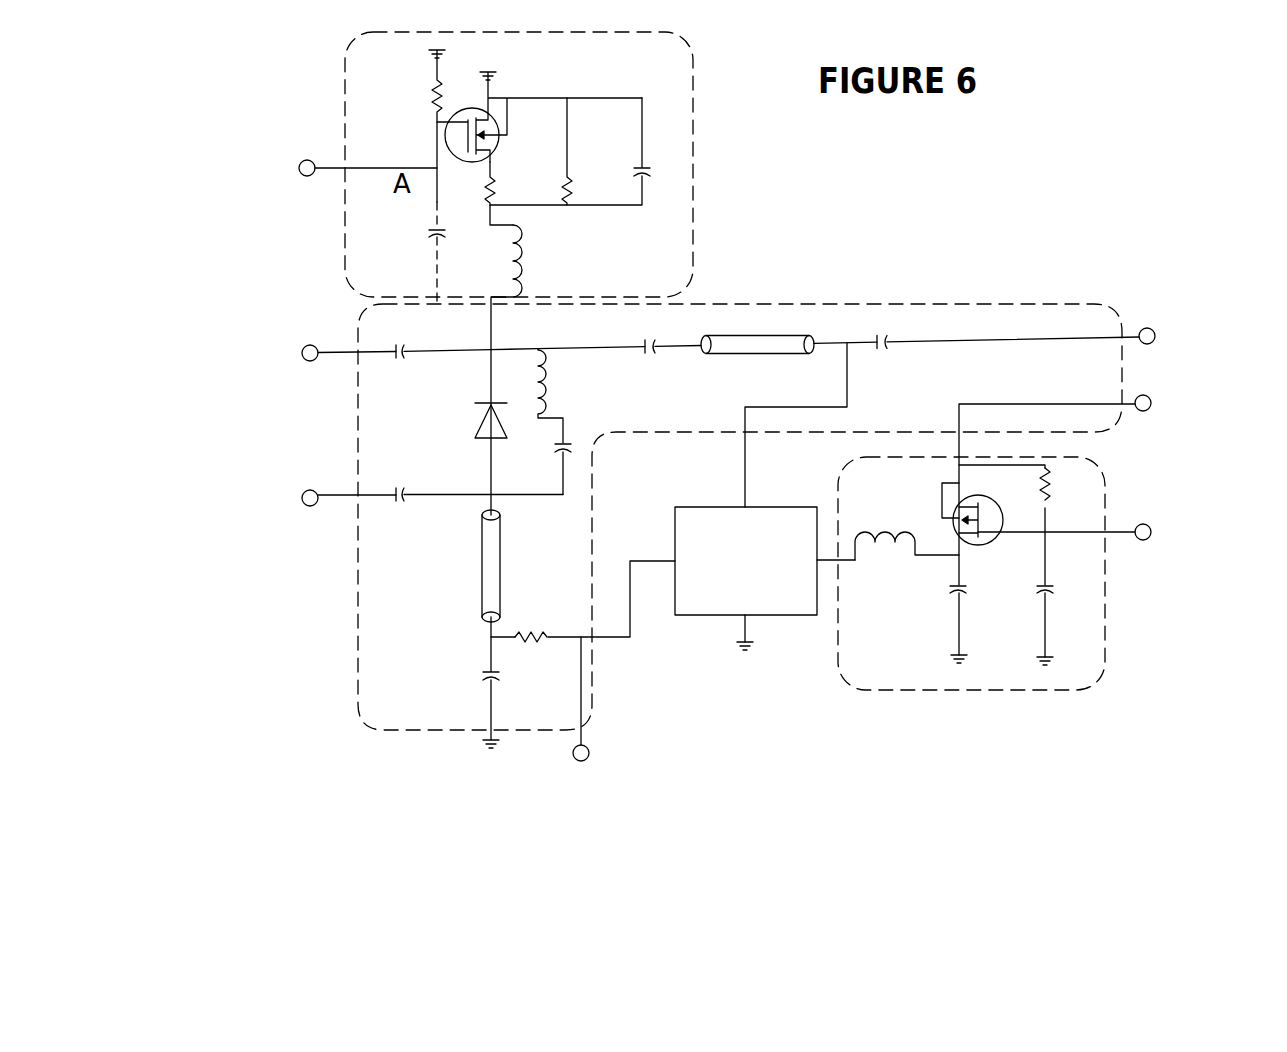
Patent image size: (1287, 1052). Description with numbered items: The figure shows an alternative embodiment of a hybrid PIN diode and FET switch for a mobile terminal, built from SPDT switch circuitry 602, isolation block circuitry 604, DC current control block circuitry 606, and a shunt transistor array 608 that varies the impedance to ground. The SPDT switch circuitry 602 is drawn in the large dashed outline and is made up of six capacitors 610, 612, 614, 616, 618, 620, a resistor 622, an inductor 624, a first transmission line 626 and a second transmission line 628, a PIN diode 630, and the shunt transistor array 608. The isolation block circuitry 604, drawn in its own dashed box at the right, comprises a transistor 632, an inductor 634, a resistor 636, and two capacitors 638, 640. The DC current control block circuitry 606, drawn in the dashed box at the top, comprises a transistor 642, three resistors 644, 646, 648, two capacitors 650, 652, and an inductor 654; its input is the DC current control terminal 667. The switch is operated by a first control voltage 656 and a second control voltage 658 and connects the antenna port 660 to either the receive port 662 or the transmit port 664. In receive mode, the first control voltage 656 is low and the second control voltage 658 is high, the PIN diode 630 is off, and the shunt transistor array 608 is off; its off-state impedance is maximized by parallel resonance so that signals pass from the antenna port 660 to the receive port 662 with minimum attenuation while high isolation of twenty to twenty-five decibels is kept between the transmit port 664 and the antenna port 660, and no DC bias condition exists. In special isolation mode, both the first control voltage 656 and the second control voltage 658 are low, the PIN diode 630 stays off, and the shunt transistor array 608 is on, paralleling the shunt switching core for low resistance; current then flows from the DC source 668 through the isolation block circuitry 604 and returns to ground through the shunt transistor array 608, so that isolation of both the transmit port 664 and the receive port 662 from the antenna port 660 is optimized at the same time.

The SPDT switch circuitry 602 is at (410, 733).
The isolation block circuitry 604 is at (927, 693).
The DC current control block circuitry 606 is at (345, 78).
The shunt transistor array 608 is at (722, 615).
The capacitor C1 610 is at (491, 690).
The capacitor C2 612 is at (410, 498).
The capacitor C3 614 is at (563, 465).
The capacitor C4 616 is at (410, 352).
The capacitor C5 618 is at (888, 347).
The capacitor C10 620 is at (643, 348).
The resistor R1 622 is at (518, 643).
The inductor L1 624 is at (550, 405).
The transmission line TRL-1 626 is at (482, 563).
The transmission line TRL-2 628 is at (732, 352).
The PIN diode D1 630 is at (488, 400).
The transistor Q1 632 is at (962, 512).
The inductor L2 634 is at (857, 548).
The resistor R2 636 is at (1052, 493).
The capacitor C6 638 is at (957, 597).
The capacitor C7 640 is at (1043, 597).
The transistor Q2 642 is at (472, 108).
The resistor R3 644 is at (432, 82).
The resistor R4 646 is at (494, 180).
The resistor R5 648 is at (566, 177).
The capacitor C8 650 is at (643, 167).
The capacitor C9 652 is at (437, 235).
The inductor L3 654 is at (518, 260).
The Vcontrol 1 656 is at (582, 762).
The Vcontrol 2 658 is at (1143, 540).
The ANT port 660 is at (308, 362).
The RX port 662 is at (1150, 345).
The TX port 664 is at (310, 508).
The DC current control terminal 667 is at (303, 178).
The DC source 668 is at (1148, 412).